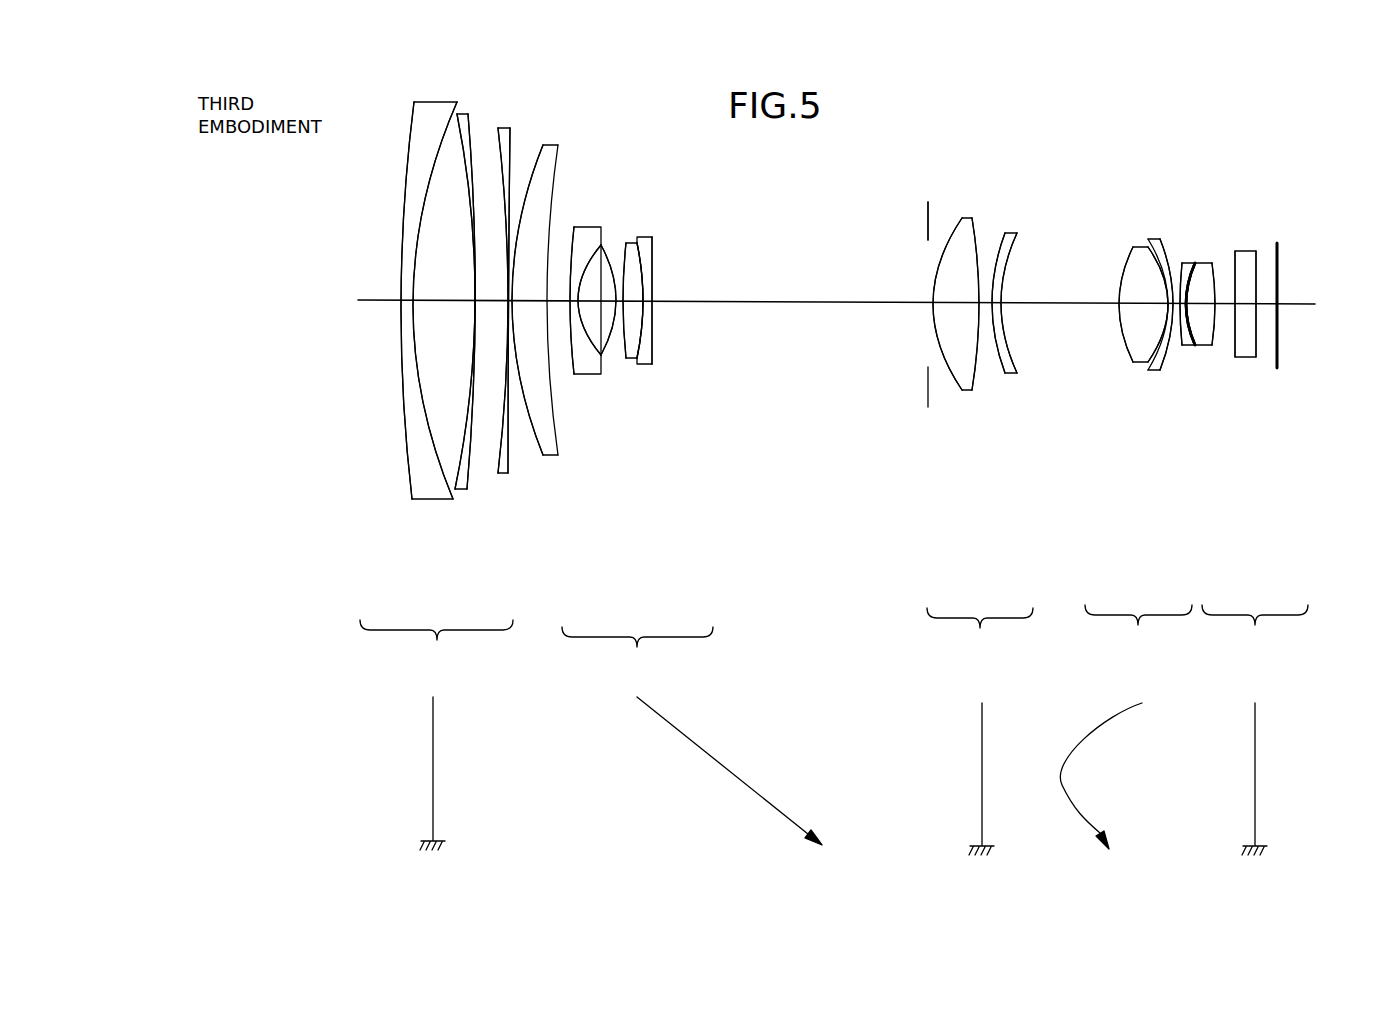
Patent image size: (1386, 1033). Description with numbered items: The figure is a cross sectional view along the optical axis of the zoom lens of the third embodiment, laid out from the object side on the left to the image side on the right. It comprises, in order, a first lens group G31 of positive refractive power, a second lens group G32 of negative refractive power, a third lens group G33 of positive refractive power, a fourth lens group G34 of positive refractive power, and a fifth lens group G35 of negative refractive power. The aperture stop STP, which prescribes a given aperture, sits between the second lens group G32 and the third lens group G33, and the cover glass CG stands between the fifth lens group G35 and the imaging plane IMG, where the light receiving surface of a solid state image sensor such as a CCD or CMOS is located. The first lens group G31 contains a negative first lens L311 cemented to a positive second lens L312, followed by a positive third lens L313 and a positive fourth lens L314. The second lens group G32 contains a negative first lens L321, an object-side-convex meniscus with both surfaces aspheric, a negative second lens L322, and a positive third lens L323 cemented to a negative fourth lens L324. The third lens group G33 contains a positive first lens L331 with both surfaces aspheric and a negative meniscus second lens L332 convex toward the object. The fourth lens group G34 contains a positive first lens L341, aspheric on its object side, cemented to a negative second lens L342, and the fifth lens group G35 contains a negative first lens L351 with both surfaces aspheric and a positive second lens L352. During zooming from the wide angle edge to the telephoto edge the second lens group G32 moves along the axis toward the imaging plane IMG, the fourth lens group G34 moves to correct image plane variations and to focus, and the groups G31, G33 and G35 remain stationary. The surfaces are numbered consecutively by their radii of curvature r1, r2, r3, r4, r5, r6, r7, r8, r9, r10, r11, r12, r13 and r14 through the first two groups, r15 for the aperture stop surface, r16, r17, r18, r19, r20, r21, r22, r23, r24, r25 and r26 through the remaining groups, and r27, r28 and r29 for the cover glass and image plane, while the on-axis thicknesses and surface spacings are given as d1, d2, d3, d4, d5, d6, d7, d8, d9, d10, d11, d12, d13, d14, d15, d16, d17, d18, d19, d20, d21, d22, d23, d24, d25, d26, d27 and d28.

The negative first lens L311 is at (430, 488).
The positive second lens L312 is at (460, 478).
The positive third lens L313 is at (497, 478).
The positive fourth lens L314 is at (550, 458).
The negative first lens L321 is at (590, 368).
The negative second lens L322 is at (613, 368).
The positive third lens L323 is at (635, 360).
The negative fourth lens L324 is at (641, 364).
The positive first lens L331 is at (966, 393).
The negative second lens L332 is at (1010, 376).
The positive first lens L341 is at (1140, 364).
The negative second lens L342 is at (1153, 373).
The negative first lens L351 is at (1190, 347).
The positive second lens L352 is at (1207, 347).
The first lens group G31 is at (436, 735).
The second lens group G32 is at (692, 736).
The third lens group G33 is at (980, 731).
The fourth lens group G34 is at (1126, 727).
The fifth lens group G35 is at (1255, 730).
The aperture stop STP is at (925, 205).
The cover glass CG is at (1248, 260).
The imaging plane IMG is at (1281, 247).
The radius of curvature r1 is at (405, 177).
The radius of curvature r2 is at (450, 133).
The radius of curvature r3 is at (470, 140).
The radius of curvature r4 is at (491, 143).
The radius of curvature r5 is at (512, 167).
The radius of curvature r6 is at (543, 153).
The radius of curvature r7 is at (557, 150).
The radius of curvature r8 is at (572, 228).
The radius of curvature r9 is at (591, 252).
The radius of curvature r10 is at (619, 237).
The radius of curvature r11 is at (627, 240).
The radius of curvature r12 is at (637, 237).
The radius of curvature r13 is at (641, 258).
The radius of curvature r14 is at (652, 285).
The radius of curvature r15 is at (925, 228).
The radius of curvature r16 is at (937, 268).
The radius of curvature r17 is at (977, 242).
The radius of curvature r18 is at (997, 242).
The radius of curvature r19 is at (1006, 268).
The radius of curvature r20 is at (1127, 274).
The radius of curvature r21 is at (1133, 251).
The radius of curvature r22 is at (1158, 262).
The radius of curvature r23 is at (1177, 263).
The radius of curvature r24 is at (1188, 263).
The radius of curvature r25 is at (1200, 263).
The radius of curvature r26 is at (1213, 263).
The radius of curvature r27 is at (1237, 282).
The radius of curvature r28 is at (1257, 290).
The radius of curvature r29 is at (1281, 287).
The thickness or surface distance d1 is at (402, 303).
The thickness or surface distance d2 is at (413, 305).
The thickness or surface distance d3 is at (475, 307).
The thickness or surface distance d4 is at (498, 305).
The thickness or surface distance d5 is at (535, 310).
The thickness or surface distance d6 is at (537, 305).
The thickness or surface distance d7 is at (556, 305).
The thickness or surface distance d8 is at (573, 310).
The thickness or surface distance d9 is at (600, 328).
The thickness or surface distance d10 is at (621, 305).
The thickness or surface distance d11 is at (633, 305).
The thickness or surface distance d12 is at (645, 305).
The thickness or surface distance d13 is at (652, 305).
The thickness or surface distance d14 is at (810, 304).
The thickness or surface distance d15 is at (935, 305).
The thickness or surface distance d16 is at (959, 306).
The thickness or surface distance d17 is at (985, 308).
The thickness or surface distance d18 is at (999, 306).
The thickness or surface distance d19 is at (1069, 305).
The thickness or surface distance d20 is at (1140, 304).
The thickness or surface distance d21 is at (1165, 310).
The thickness or surface distance d22 is at (1173, 307).
The thickness or surface distance d23 is at (1187, 310).
The thickness or surface distance d24 is at (1190, 310).
The thickness or surface distance d25 is at (1207, 307).
The thickness or surface distance d26 is at (1223, 307).
The thickness or surface distance d27 is at (1240, 307).
The thickness or surface distance d28 is at (1265, 306).